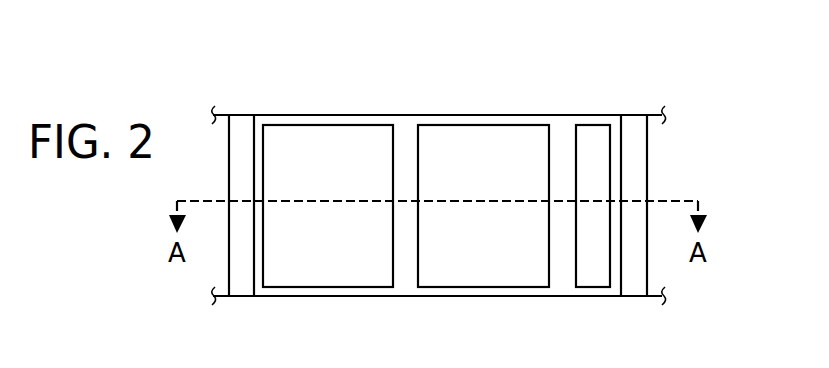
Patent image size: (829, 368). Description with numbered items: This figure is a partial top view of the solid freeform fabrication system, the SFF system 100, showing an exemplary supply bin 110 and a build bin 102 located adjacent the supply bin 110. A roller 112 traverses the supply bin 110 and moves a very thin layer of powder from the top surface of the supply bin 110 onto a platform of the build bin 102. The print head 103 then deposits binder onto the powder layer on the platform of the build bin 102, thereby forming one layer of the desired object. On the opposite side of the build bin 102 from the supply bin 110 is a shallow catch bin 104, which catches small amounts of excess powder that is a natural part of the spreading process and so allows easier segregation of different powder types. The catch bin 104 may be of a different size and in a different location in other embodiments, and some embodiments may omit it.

The SFF system 100 is at (446, 92).
The build bin 102 is at (482, 262).
The print head 103 is at (635, 153).
The shallow catch bin 104 is at (592, 142).
The supply bin 110 is at (330, 142).
The roller 112 is at (239, 142).